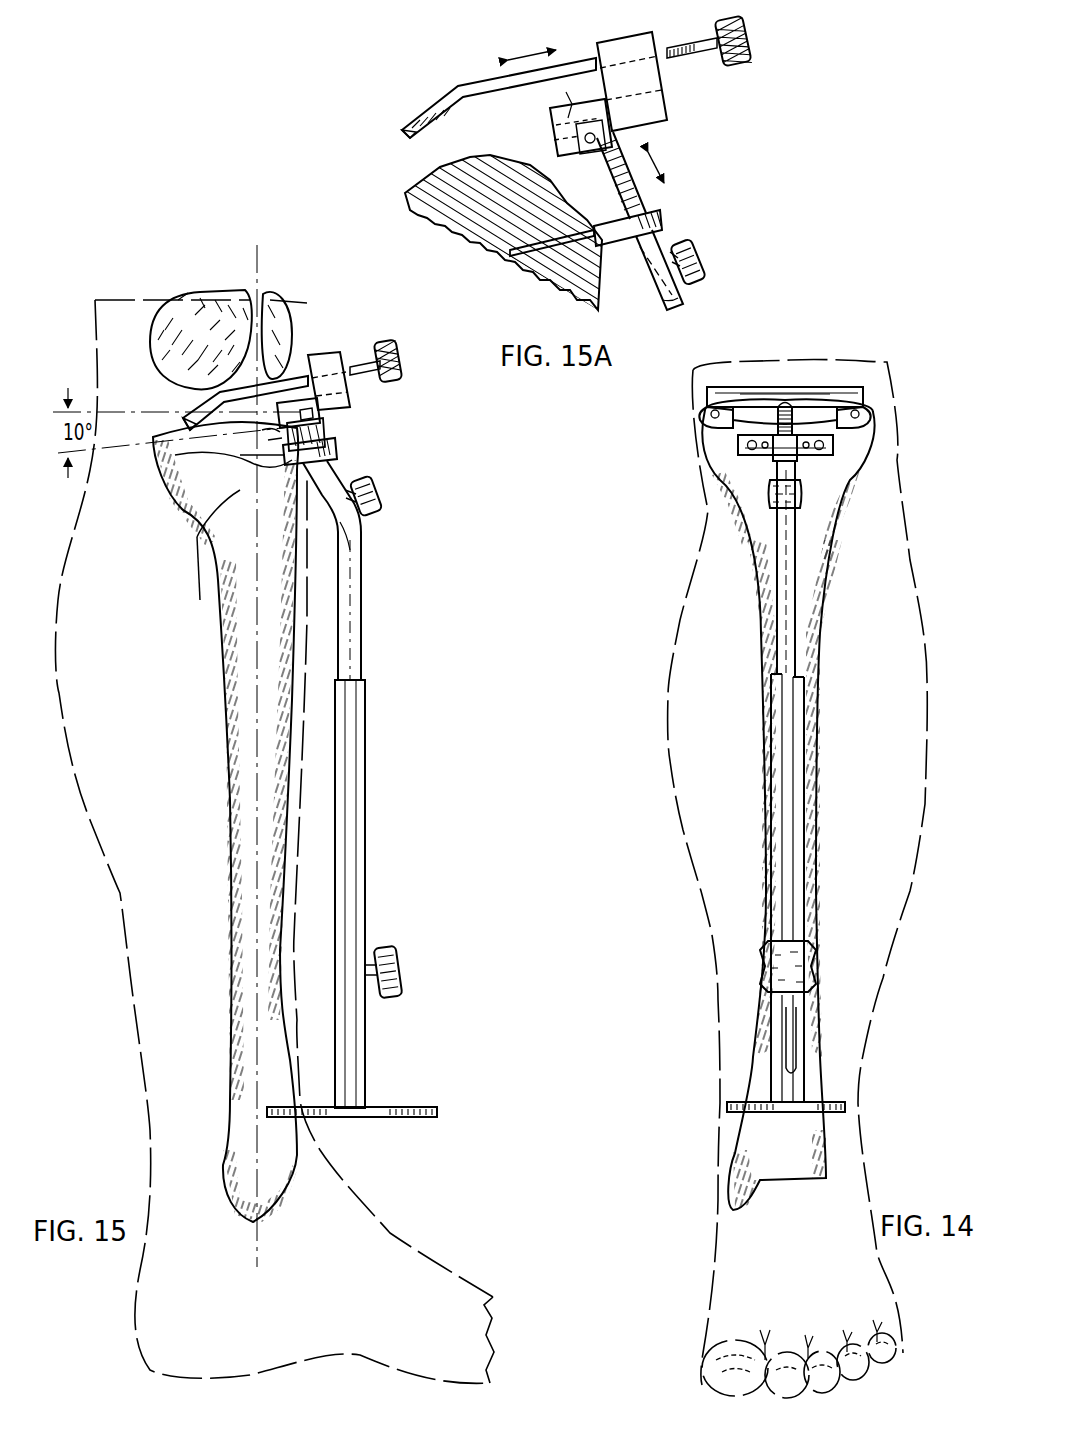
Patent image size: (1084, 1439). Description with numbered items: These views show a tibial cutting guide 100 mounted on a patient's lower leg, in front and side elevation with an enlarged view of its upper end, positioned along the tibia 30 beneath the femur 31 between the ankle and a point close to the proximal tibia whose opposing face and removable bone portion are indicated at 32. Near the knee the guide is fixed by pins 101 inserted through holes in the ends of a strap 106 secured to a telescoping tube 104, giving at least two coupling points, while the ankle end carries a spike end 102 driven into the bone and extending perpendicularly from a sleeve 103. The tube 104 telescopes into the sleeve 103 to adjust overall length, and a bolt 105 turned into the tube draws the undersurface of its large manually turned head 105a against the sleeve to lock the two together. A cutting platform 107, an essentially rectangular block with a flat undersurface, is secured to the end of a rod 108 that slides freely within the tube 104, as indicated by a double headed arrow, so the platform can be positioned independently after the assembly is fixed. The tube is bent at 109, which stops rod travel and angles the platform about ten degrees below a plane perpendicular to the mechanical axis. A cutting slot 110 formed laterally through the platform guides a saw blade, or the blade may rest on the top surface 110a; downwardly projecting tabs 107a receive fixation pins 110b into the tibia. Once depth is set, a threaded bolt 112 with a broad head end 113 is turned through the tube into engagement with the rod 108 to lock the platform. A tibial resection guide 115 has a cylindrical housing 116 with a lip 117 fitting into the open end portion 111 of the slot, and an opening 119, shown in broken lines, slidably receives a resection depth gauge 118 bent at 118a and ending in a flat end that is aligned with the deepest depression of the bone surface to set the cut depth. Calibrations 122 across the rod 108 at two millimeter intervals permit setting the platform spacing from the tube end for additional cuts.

In FIG. 15, the tibia 30 is at (225, 752).
In FIG. 14, the tibia 30 is at (820, 600).
In FIG. 15, the femur 31 is at (150, 345).
In FIG. 15A, the proximal tibia face / bone portion 32 is at (462, 160).
In FIG. 15, the tibial cutting guide 100 is at (368, 632).
In FIG. 14, the tibial cutting guide 100 is at (772, 806).
In FIG. 15A, the pins 101 is at (662, 216).
In FIG. 15, the pins 101 is at (338, 456).
In FIG. 14, the pins 101 is at (738, 452).
In FIG. 15, the spike end 102 is at (330, 1118).
In FIG. 14, the spike end 102 is at (733, 1100).
In FIG. 15, the sleeve 103 is at (358, 1052).
In FIG. 14, the sleeve 103 is at (780, 896).
In FIG. 15A, the telescoping tube 104 is at (660, 310).
In FIG. 15, the telescoping tube 104 is at (352, 664).
In FIG. 14, the telescoping tube 104 is at (780, 650).
In FIG. 15, the bolt 105 is at (376, 962).
In FIG. 14, the bolt 105 is at (770, 968).
In FIG. 15, the head 105a is at (400, 974).
In FIG. 15A, the strap 106 is at (595, 248).
In FIG. 15, the strap 106 is at (290, 474).
In FIG. 14, the strap 106 is at (834, 458).
In FIG. 15A, the cutting platform 107 is at (618, 140).
In FIG. 15, the cutting platform 107 is at (325, 428).
In FIG. 15A, the tabs 107a is at (556, 148).
In FIG. 15, the tabs 107a is at (270, 444).
In FIG. 14, the tabs 107a is at (737, 444).
In FIG. 15A, the rod 108 is at (658, 143).
In FIG. 15, the rod 108 is at (330, 440).
In FIG. 14, the rod 108 is at (777, 420).
In FIG. 15, the bend 109 is at (340, 532).
In FIG. 15A, the cutting slot 110 is at (577, 100).
In FIG. 15, the cutting slot 110 is at (296, 340).
In FIG. 14, the cutting slot 110 is at (862, 392).
In FIG. 15A, the top surface 110a is at (566, 100).
In FIG. 15, the top surface 110a is at (303, 378).
In FIG. 14, the top surface 110a is at (824, 388).
In FIG. 15, the fixation pins 110b is at (258, 432).
In FIG. 14, the fixation pins 110b is at (703, 416).
In FIG. 14, the open end portion 111 is at (786, 402).
In FIG. 15A, the bolt 112 is at (690, 280).
In FIG. 15, the bolt 112 is at (362, 506).
In FIG. 15A, the head end 113 is at (700, 254).
In FIG. 15, the head end 113 is at (382, 494).
In FIG. 14, the head end 113 is at (768, 497).
In FIG. 15A, the tibial resection guide 115 is at (656, 42).
In FIG. 15, the tibial resection guide 115 is at (350, 352).
In FIG. 15A, the cylindrical housing 116 is at (668, 66).
In FIG. 15, the cylindrical housing 116 is at (356, 380).
In FIG. 15A, the lip 117 is at (633, 107).
In FIG. 15, the lip 117 is at (321, 405).
In FIG. 15A, the resection depth gauge 118 is at (490, 83).
In FIG. 15, the resection depth gauge 118 is at (250, 390).
In FIG. 15A, the bend 118a is at (460, 78).
In FIG. 15, the bend 118a is at (214, 400).
In FIG. 15A, the opening 119 is at (626, 50).
In FIG. 15, the opening 119 is at (332, 354).
In FIG. 15A, the calibrations 122 is at (644, 198).